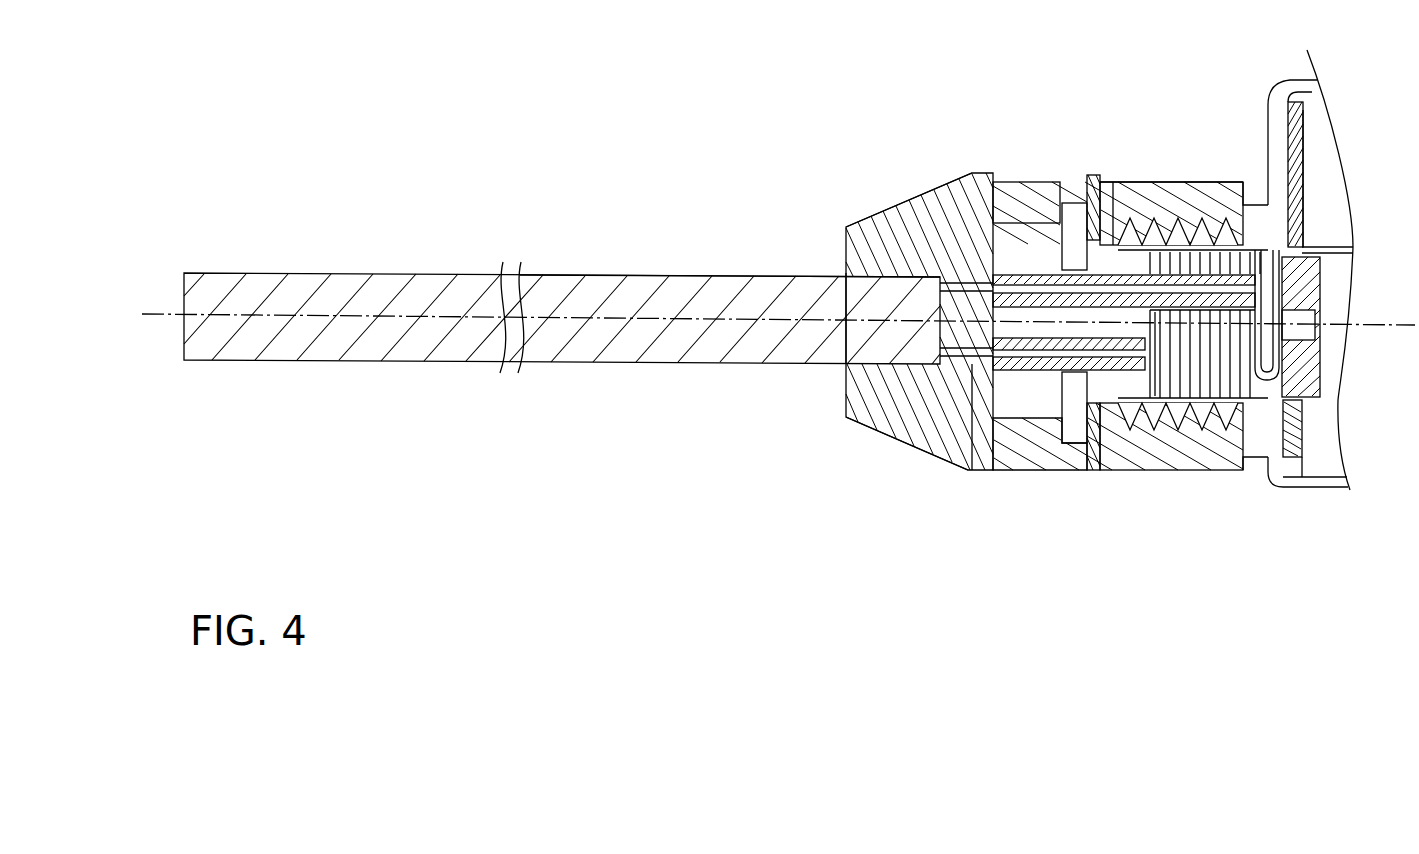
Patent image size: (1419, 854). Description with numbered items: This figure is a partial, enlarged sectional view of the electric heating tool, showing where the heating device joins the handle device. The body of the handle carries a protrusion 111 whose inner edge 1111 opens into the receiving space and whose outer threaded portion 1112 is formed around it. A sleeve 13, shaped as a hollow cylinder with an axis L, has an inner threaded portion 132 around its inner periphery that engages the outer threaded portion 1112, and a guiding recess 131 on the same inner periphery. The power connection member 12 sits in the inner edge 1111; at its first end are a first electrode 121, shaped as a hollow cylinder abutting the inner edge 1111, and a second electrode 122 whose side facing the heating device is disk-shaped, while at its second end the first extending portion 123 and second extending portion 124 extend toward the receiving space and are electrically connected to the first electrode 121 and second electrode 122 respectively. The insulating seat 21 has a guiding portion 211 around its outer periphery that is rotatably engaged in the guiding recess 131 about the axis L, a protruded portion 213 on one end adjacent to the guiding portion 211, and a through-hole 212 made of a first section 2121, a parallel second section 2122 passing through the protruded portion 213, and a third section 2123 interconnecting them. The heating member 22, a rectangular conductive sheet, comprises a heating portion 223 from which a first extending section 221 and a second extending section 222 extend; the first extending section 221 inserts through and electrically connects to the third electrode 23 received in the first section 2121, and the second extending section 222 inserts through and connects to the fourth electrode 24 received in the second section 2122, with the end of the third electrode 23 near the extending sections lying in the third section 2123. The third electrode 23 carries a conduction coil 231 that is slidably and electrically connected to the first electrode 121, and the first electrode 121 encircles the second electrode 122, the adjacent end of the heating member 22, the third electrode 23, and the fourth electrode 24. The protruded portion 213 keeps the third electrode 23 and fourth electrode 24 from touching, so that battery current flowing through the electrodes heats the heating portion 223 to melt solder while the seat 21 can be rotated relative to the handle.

The axis L is at (153, 318).
The power connection member 12 is at (1292, 552).
The first electrode 121 is at (1228, 440).
The second electrode 122 is at (1268, 455).
The first extending portion 123 is at (1333, 245).
The second extending portion 124 is at (1332, 385).
The sleeve 13 is at (1220, 190).
The guiding recess 131 is at (1076, 445).
The inner threaded portion 132 is at (1145, 205).
The protrusion 111 is at (1190, 205).
The inner edge 1111 is at (1190, 430).
The outer threaded portion 1112 is at (1160, 440).
The seat 21 is at (872, 413).
The guiding portion 211 is at (1068, 205).
The through-hole 212 is at (845, 293).
The first section 2121 is at (974, 425).
The second section 2122 is at (972, 200).
The third section 2123 is at (848, 352).
The protruded portion 213 is at (1108, 210).
The heating member 22 is at (368, 258).
The first extending section 221 is at (918, 405).
The second extending section 222 is at (933, 203).
The heating portion 223 is at (604, 291).
The third electrode 23 is at (1013, 440).
The conduction coil 231 is at (1130, 440).
The fourth electrode 24 is at (1005, 205).